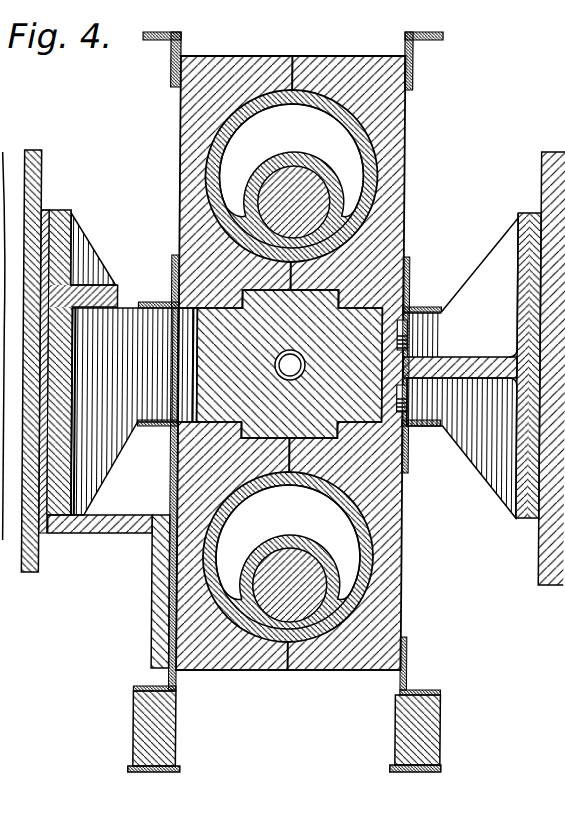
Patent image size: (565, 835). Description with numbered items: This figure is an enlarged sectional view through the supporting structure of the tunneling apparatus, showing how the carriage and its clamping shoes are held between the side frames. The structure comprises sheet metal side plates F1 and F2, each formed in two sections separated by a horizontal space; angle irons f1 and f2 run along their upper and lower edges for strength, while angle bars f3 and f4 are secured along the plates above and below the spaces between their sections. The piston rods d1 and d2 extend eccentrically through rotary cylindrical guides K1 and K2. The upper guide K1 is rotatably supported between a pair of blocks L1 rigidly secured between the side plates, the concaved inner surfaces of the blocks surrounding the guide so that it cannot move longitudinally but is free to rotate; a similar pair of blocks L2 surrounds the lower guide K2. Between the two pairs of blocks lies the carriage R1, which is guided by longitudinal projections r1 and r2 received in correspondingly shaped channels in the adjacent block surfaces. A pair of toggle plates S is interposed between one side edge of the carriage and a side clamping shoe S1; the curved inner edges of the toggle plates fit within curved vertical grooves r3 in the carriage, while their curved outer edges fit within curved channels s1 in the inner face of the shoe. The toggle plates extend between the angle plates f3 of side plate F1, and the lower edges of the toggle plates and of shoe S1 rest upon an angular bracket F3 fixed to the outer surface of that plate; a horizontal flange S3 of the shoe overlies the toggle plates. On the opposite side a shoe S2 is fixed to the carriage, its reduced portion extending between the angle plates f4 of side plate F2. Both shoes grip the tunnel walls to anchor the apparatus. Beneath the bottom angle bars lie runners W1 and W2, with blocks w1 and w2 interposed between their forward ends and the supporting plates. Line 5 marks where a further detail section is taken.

The blocks L1 is at (311, 56).
The blocks L2 is at (258, 670).
The rotary cylindrical guide K1 is at (304, 162).
The rotary cylindrical guide K2 is at (265, 540).
The piston rod d1 is at (273, 178).
The piston rod d2 is at (303, 562).
The carriage R1 is at (220, 386).
The longitudinal projection r1 is at (300, 360).
The longitudinal projection r2 is at (306, 296).
The curved vertical grooves r3 is at (197, 325).
The toggle plates S is at (530, 195).
The curved channels s1 is at (75, 390).
The side clamping shoe S1 is at (66, 212).
The shoe S2 is at (518, 248).
The horizontal flange S3 is at (100, 284).
The line 5 is at (12, 334).
The side plate F1 is at (179, 137).
The side plate F2 is at (406, 137).
The angular bracket F3 is at (93, 533).
The angle irons f1 is at (160, 40).
The angle irons f2 is at (438, 41).
The angle bars f3 is at (153, 302).
The angle bars f4 is at (421, 308).
The block w1 is at (142, 720).
The runner W1 is at (130, 770).
The block w2 is at (440, 722).
The runner W2 is at (443, 770).